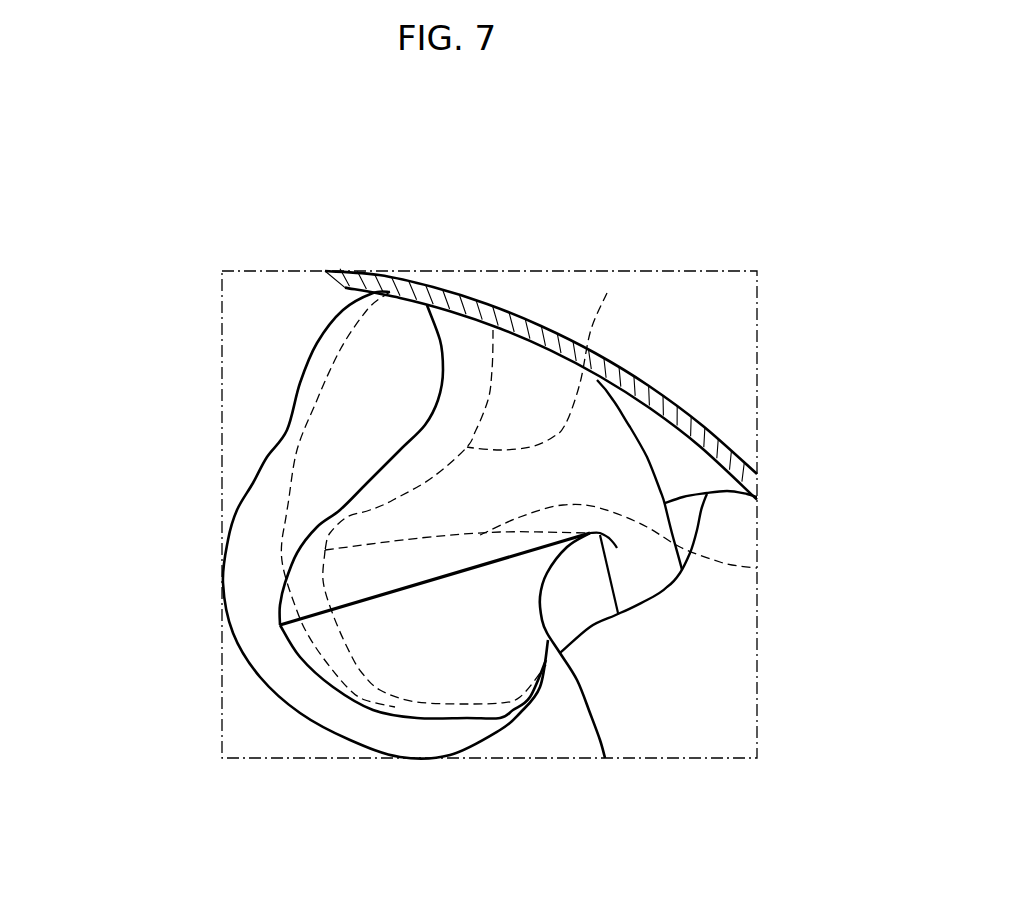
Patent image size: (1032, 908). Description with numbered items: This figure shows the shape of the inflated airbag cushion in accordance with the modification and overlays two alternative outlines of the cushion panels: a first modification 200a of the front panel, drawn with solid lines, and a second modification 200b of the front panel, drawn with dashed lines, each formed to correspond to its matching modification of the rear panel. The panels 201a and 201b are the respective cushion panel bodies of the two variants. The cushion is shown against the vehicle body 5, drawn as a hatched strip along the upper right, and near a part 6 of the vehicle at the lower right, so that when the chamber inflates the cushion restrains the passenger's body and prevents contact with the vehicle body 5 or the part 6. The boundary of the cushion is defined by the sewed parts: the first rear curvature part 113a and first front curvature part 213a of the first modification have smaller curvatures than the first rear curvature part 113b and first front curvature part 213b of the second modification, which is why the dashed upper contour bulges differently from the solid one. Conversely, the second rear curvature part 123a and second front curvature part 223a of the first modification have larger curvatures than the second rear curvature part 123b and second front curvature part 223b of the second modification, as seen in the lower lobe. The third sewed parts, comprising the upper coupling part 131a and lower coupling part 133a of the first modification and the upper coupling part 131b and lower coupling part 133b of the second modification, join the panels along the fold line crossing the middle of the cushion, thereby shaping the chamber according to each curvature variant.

The first modification of the front panel 200a is at (137, 493).
The second modification of the front panel 200b is at (148, 310).
The first cushion panel 201a is at (262, 540).
The second cushion panel 201b is at (367, 395).
The vehicle body 5 is at (660, 407).
The part of the vehicle 6 is at (590, 713).
The first rear curvature part 113a is at (460, 363).
The first front curvature part 213a is at (487, 403).
The first rear curvature part 113b is at (617, 313).
The first front curvature part 213b is at (607, 293).
The upper coupling part 131a is at (448, 714).
The lower coupling part 133a is at (436, 583).
The upper coupling part 131b is at (615, 544).
The lower coupling part 133b is at (757, 568).
The second rear curvature part 123a is at (413, 734).
The second front curvature part 223a is at (355, 707).
The second rear curvature part 123b is at (347, 708).
The second front curvature part 223b is at (347, 647).